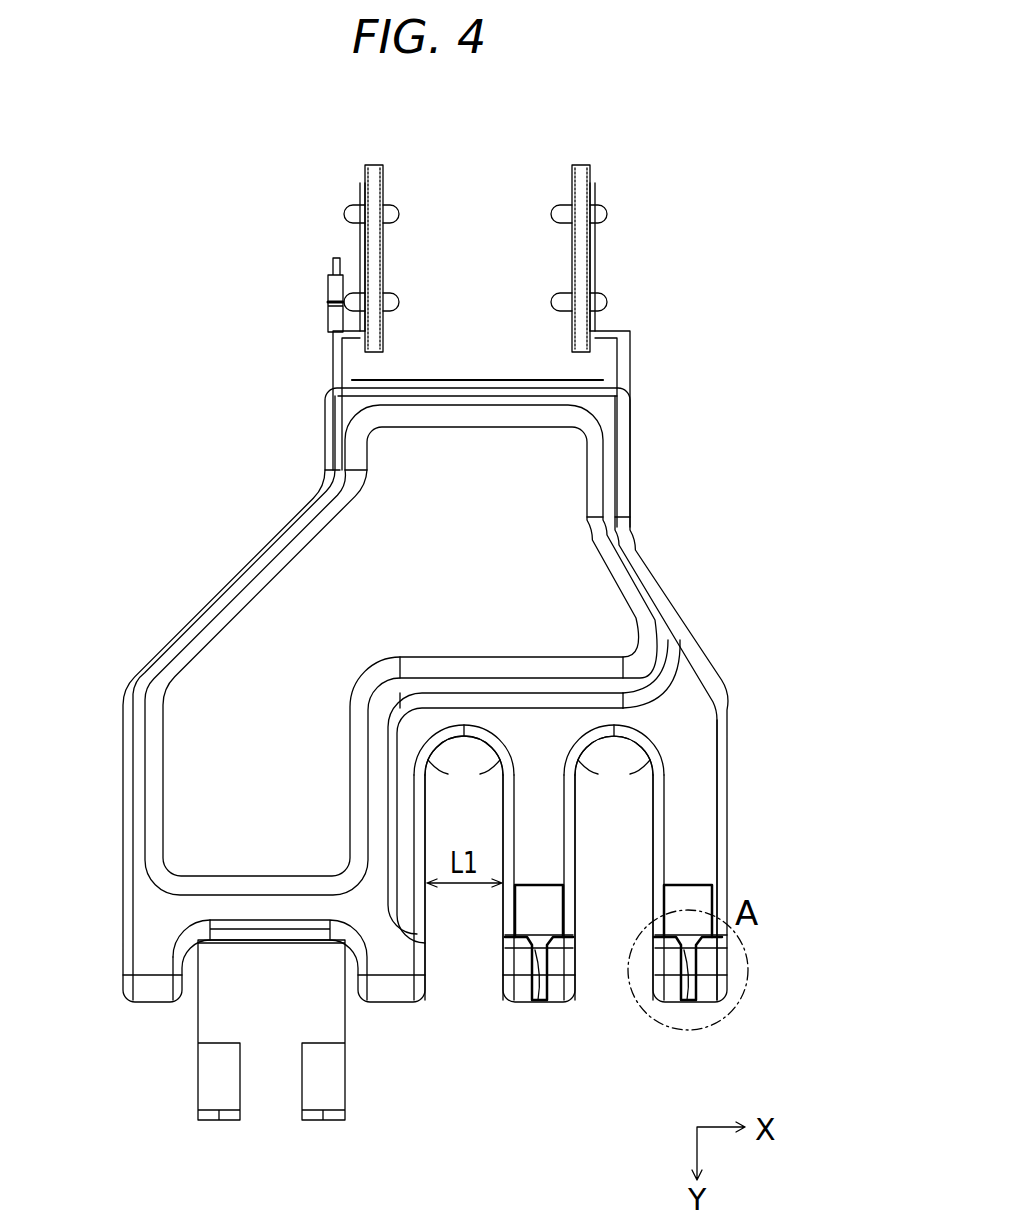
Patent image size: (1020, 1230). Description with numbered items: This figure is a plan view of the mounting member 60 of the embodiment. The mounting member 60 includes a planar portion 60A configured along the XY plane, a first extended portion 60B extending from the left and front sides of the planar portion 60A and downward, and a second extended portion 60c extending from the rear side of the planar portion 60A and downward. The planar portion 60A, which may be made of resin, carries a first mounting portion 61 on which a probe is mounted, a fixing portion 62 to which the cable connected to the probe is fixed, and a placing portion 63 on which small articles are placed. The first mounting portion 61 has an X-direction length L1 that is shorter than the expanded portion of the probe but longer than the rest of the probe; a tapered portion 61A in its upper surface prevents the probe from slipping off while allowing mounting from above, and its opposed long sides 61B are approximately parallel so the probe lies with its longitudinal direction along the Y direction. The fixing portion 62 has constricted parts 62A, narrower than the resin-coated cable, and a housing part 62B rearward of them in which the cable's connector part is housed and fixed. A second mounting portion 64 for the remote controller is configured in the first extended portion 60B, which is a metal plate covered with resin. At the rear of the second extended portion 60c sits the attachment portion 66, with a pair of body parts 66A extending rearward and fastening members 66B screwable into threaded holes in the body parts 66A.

The mounting member 60 is at (99, 175).
The planar portion 60A is at (148, 905).
The first extended portion 60B is at (218, 1018).
The second extended portion 60c is at (622, 360).
The first mounting portion 61 is at (465, 962).
The tapered portion 61A is at (428, 757).
The long sides 61B is at (503, 823).
The fixing portion 62 is at (537, 966).
The constricted part 62A is at (540, 960).
The housing part 62B is at (555, 893).
The placing portion 63 is at (290, 625).
The second mounting portion 64 is at (207, 1017).
The attachment portion 66 is at (582, 189).
The body part 66A is at (582, 263).
The fastening member 66B is at (352, 215).